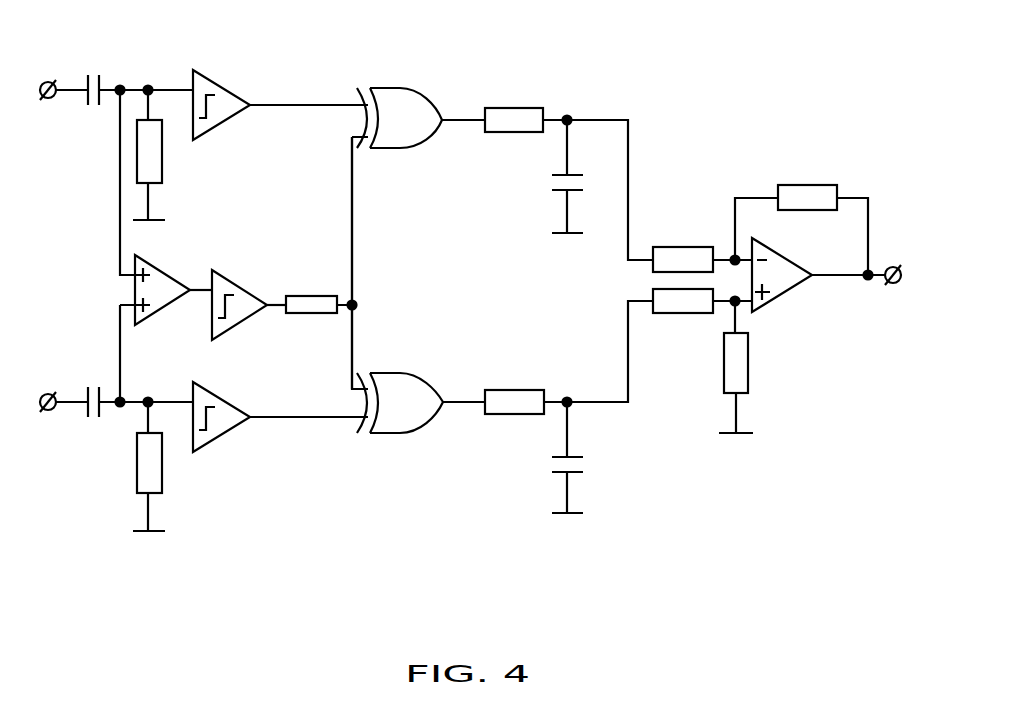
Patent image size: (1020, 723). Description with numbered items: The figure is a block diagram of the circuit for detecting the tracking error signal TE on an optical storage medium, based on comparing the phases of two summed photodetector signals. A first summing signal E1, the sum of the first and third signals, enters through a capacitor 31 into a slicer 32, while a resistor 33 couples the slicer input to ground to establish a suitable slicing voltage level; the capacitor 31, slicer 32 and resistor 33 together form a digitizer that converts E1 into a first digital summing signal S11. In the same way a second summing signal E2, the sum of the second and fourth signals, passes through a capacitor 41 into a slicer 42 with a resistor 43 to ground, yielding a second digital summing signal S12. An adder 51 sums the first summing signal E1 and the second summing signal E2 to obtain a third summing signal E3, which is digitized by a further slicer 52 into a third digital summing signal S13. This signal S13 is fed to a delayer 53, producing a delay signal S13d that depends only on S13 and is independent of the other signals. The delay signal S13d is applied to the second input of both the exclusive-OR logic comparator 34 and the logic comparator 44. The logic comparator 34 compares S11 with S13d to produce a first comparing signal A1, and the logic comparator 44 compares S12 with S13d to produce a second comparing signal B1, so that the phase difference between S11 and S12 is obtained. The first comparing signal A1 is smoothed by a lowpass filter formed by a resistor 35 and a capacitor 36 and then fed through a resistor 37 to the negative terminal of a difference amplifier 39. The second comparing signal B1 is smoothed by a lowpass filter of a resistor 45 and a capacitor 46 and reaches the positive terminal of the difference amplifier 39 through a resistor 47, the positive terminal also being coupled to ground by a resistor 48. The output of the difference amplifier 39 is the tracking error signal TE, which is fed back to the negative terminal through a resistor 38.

The capacitor 31 is at (96, 72).
The slicer 32 is at (222, 78).
The resistor 33 is at (162, 162).
The logic comparator 34 is at (403, 102).
The resistor 35 is at (515, 108).
The capacitor 36 is at (552, 182).
The resistor 37 is at (683, 247).
The resistor 38 is at (800, 185).
The difference amplifier 39 is at (795, 290).
The capacitor 41 is at (97, 385).
The slicer 42 is at (236, 430).
The resistor 43 is at (162, 475).
The logic comparator 44 is at (405, 383).
The resistor 45 is at (517, 390).
The capacitor 46 is at (552, 462).
The resistor 47 is at (683, 313).
The resistor 48 is at (748, 373).
The adder 51 is at (163, 268).
The comparator 52 is at (246, 320).
The delayer 53 is at (320, 295).
The first summing signal E1 is at (72, 96).
The second summing signal E2 is at (72, 405).
The third summing signal E3 is at (201, 288).
The first digital summing signal S11 is at (315, 102).
The second digital summing signal S12 is at (338, 420).
The third digital summing signal S13 is at (278, 300).
The delay signal S13d is at (355, 275).
The first comparing signal A1 is at (461, 118).
The second comparing signal B1 is at (462, 400).
The tracking error signal TE is at (893, 293).